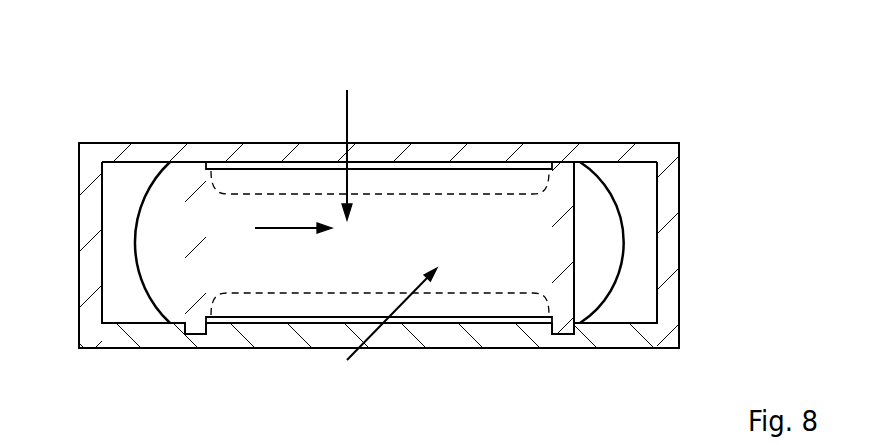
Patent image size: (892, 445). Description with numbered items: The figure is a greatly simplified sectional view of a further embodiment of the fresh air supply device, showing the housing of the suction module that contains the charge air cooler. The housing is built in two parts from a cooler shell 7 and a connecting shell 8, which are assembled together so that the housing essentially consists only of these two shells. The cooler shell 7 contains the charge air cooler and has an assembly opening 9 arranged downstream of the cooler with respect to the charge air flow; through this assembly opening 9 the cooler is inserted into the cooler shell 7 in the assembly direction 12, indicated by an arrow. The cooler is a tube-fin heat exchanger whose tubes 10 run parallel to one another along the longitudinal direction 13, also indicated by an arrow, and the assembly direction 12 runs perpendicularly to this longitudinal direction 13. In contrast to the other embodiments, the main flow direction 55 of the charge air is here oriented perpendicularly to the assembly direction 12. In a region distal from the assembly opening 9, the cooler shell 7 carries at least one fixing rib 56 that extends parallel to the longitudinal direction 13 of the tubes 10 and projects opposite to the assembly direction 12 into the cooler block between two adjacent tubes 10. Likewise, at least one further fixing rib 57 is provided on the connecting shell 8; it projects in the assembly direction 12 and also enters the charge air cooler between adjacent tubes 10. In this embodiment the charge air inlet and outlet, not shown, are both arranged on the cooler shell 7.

The cooler shell 7 is at (668, 230).
The connecting shell 8 is at (387, 150).
The assembly opening 9 is at (131, 178).
The tubes 10 is at (283, 273).
The assembly direction 12 is at (345, 121).
The longitudinal direction of the tubes 13 is at (285, 228).
The main flow direction 55 is at (400, 308).
The fixing rib 56 is at (487, 305).
The fixing rib 57 is at (453, 183).